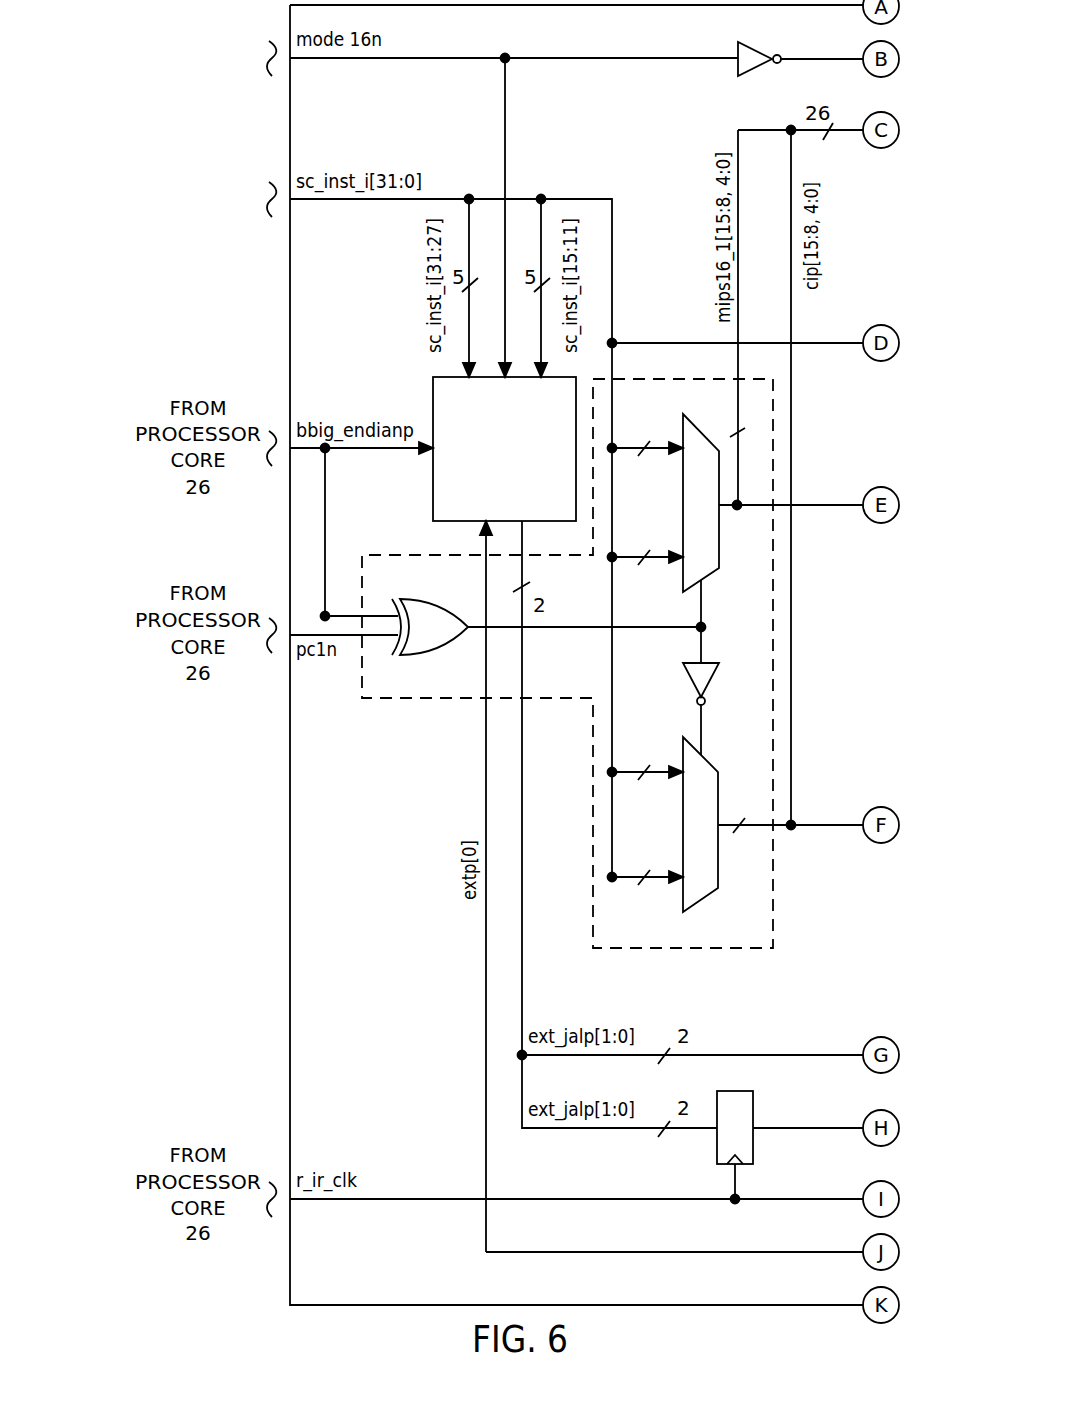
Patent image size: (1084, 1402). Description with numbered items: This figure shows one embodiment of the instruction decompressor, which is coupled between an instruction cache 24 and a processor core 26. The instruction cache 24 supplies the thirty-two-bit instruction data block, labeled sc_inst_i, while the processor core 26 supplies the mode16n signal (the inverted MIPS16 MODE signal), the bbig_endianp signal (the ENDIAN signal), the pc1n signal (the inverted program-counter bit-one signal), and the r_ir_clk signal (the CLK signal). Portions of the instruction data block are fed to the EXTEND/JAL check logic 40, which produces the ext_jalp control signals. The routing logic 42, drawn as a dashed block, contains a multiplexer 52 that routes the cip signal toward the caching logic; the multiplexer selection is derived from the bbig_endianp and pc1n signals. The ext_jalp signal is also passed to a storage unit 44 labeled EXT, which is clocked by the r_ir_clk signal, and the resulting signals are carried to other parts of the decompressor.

The EXTEND/JAL check logic 40 is at (493, 499).
The routing logic 42 is at (764, 937).
The multiplexer 52 is at (680, 907).
The storage unit 44 is at (753, 1147).
The processor core 26 is at (205, 56).
The instruction cache 24 is at (218, 197).